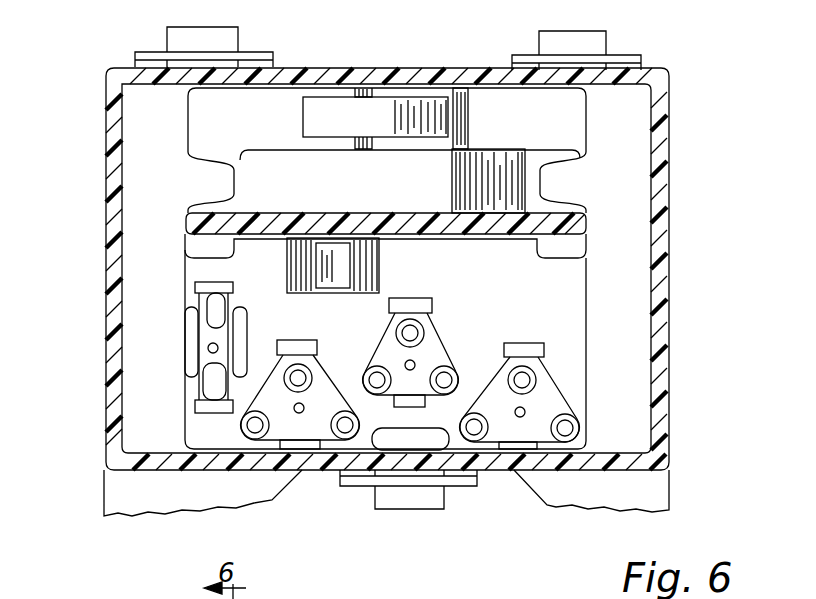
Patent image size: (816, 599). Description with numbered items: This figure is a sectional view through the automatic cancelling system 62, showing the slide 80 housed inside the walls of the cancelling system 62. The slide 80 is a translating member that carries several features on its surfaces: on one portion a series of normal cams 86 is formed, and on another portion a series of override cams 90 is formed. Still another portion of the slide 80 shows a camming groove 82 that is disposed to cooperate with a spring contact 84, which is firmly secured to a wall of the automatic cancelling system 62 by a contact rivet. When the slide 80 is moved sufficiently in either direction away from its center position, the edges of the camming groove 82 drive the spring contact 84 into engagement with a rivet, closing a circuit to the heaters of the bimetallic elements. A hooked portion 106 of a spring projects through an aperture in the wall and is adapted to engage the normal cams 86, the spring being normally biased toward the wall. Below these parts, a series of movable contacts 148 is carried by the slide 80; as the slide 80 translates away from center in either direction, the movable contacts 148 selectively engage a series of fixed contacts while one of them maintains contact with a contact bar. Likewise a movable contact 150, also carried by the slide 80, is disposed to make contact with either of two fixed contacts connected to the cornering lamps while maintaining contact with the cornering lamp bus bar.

The automatic cancelling system 62 is at (107, 70).
The slide 80 is at (668, 262).
The camming groove 82 is at (386, 92).
The spring contact 84 is at (329, 106).
The normal cams 86 is at (287, 255).
The override cams 90 is at (521, 168).
The hooked portion 106 is at (350, 275).
The movable contacts 148 is at (325, 382).
The movable contact 150 is at (205, 342).